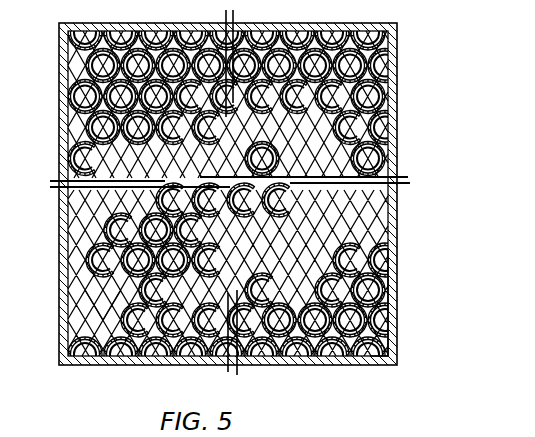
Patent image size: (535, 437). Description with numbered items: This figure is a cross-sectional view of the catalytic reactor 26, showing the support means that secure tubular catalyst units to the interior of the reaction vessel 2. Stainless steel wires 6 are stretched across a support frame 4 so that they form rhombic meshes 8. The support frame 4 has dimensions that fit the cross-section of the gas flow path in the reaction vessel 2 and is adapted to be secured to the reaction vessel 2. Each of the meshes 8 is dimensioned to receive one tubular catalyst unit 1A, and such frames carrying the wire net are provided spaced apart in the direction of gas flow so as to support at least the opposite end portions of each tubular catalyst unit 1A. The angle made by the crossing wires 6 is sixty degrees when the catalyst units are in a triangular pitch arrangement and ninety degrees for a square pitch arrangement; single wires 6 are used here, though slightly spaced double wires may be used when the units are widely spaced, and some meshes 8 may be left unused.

The tubular catalyst unit 1A is at (390, 82).
The reaction vessel 2 is at (396, 199).
The support frame 4 is at (386, 224).
The wires 6 is at (334, 147).
The rhombic meshes 8 is at (390, 124).
The catalytic reactor 26 is at (398, 272).